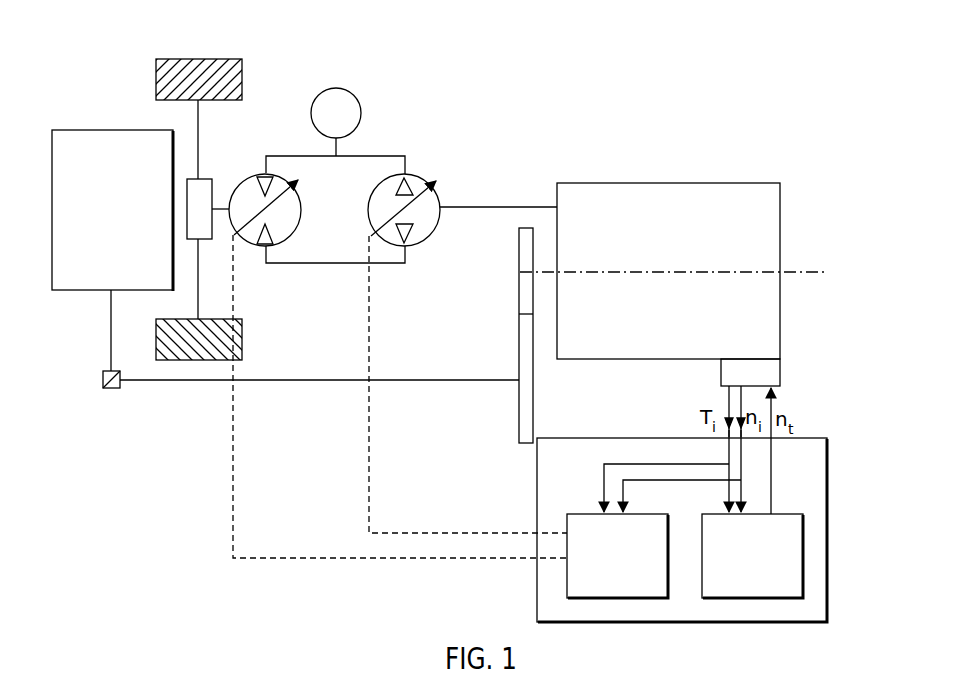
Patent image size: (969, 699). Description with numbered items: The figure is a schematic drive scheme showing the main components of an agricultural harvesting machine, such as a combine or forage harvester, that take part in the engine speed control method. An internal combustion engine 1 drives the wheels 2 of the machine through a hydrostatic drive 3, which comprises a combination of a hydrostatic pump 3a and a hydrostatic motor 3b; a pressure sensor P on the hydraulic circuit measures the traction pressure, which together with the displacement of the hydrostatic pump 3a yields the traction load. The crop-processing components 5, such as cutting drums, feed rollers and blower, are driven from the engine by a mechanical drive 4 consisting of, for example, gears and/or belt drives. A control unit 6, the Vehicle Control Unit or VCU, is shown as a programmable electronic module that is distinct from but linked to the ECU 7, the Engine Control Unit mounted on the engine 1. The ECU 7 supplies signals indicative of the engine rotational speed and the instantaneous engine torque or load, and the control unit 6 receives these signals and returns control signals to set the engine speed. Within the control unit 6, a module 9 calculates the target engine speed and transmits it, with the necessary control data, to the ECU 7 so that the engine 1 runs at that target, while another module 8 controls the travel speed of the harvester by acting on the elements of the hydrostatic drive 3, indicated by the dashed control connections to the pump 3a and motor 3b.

The internal combustion engine 1 is at (662, 210).
The wheels 2 is at (228, 72).
The hydrostatic drive 3 is at (349, 137).
The hydrostatic pump 3a is at (416, 178).
The hydrostatic motor 3b is at (253, 182).
The mechanical drive 4 is at (505, 391).
The crop-processing components 5 is at (100, 130).
The control unit 6 is at (613, 448).
The ECU 7 is at (720, 372).
The module 8 is at (616, 589).
The module 9 is at (738, 590).